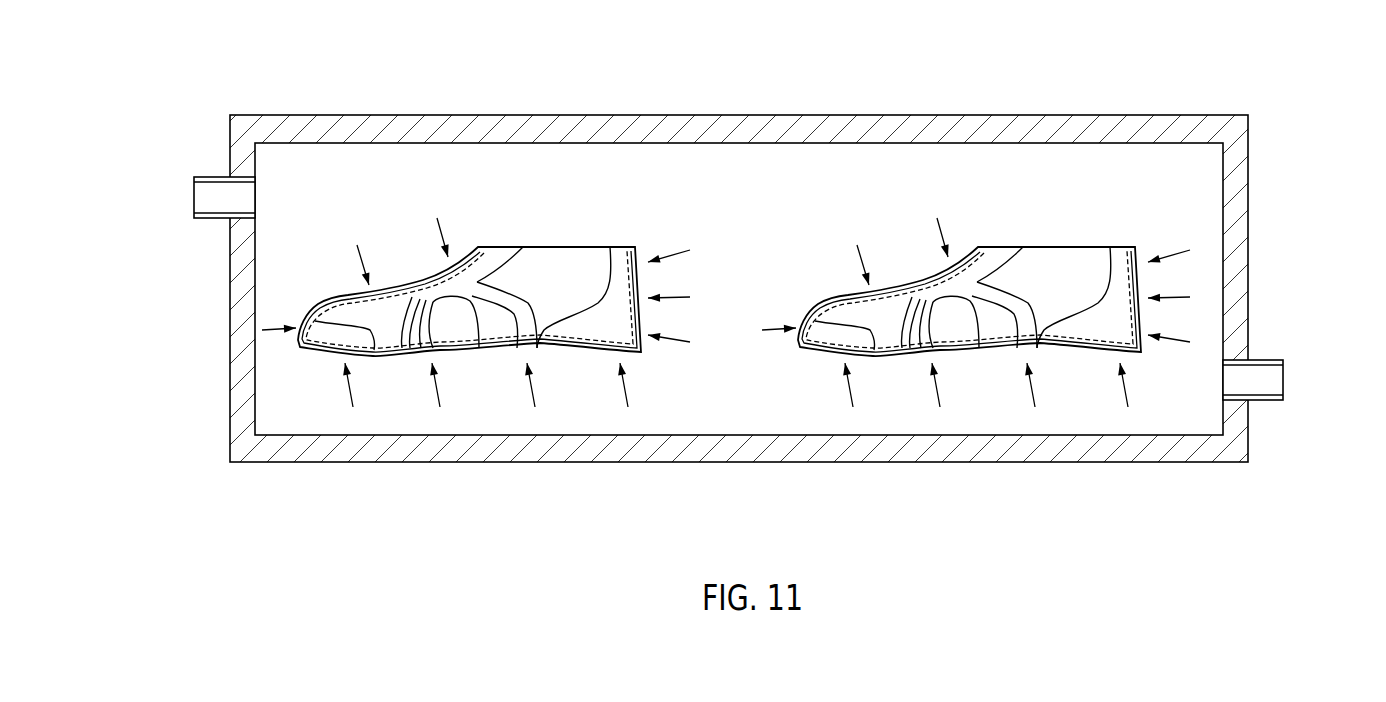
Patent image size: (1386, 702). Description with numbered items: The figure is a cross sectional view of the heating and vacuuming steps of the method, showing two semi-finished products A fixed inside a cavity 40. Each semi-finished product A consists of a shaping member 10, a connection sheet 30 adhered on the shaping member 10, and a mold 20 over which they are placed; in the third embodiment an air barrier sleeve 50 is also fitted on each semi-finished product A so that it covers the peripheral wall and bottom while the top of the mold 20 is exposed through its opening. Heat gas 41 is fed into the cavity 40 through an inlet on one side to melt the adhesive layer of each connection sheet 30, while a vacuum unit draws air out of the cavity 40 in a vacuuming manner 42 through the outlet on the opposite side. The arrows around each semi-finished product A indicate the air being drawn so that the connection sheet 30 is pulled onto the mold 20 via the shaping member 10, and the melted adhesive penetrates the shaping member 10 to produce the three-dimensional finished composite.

The shaping member 10 is at (333, 300).
The mold 20 is at (530, 257).
The connection sheet 30 is at (592, 330).
The cavity 40 is at (453, 397).
The heat gas 41 is at (203, 211).
The vacuuming manner 42 is at (1231, 382).
The air barrier sleeve 50 is at (413, 283).
The semi-finished product A is at (566, 212).